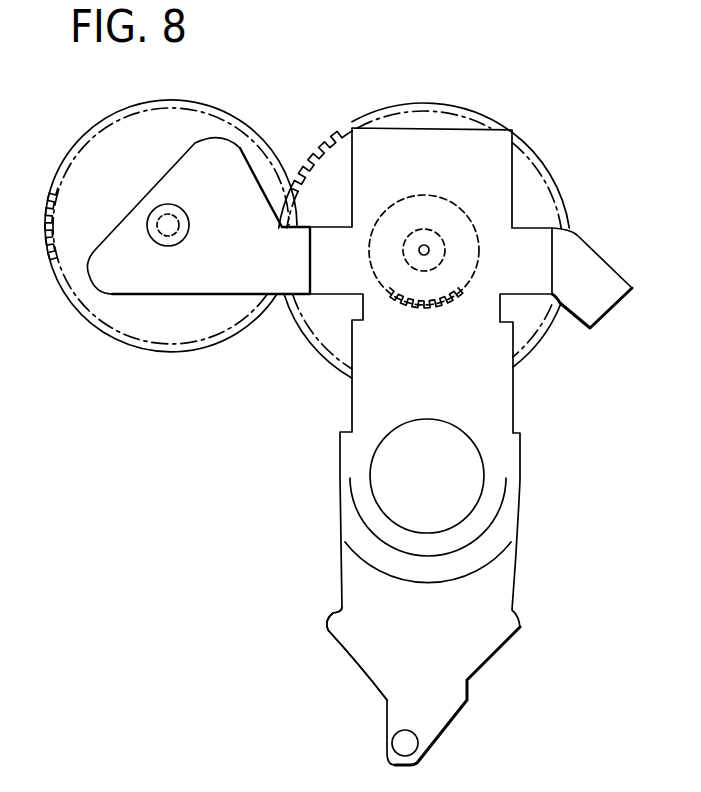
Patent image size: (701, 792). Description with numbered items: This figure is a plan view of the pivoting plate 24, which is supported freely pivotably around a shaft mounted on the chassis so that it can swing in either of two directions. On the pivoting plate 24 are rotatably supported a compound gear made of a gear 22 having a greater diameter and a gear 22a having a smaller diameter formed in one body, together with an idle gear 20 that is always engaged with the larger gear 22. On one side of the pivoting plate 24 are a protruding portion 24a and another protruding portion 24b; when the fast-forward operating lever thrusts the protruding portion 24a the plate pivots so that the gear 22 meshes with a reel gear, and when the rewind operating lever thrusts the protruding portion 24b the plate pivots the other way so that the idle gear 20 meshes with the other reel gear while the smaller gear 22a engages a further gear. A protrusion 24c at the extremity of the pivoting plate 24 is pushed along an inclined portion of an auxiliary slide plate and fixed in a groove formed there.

The idle gear 20 is at (53, 187).
The gear having a greater diameter 22 is at (330, 143).
The gear having a smaller diameter 22a is at (404, 200).
The pivoting plate 24 is at (475, 153).
The protruding portion 24a is at (521, 624).
The protruding portion 24b is at (331, 613).
The protrusion 24c is at (407, 745).